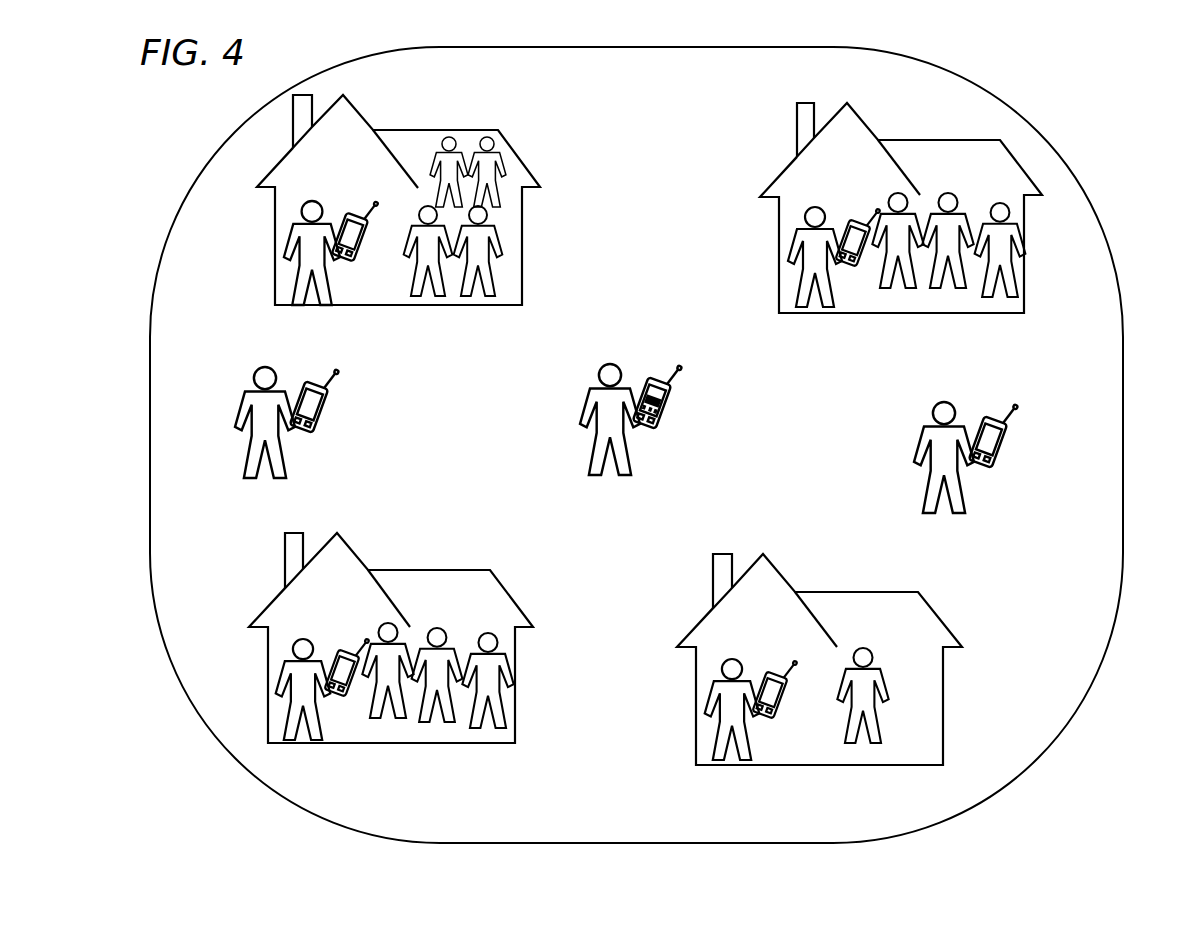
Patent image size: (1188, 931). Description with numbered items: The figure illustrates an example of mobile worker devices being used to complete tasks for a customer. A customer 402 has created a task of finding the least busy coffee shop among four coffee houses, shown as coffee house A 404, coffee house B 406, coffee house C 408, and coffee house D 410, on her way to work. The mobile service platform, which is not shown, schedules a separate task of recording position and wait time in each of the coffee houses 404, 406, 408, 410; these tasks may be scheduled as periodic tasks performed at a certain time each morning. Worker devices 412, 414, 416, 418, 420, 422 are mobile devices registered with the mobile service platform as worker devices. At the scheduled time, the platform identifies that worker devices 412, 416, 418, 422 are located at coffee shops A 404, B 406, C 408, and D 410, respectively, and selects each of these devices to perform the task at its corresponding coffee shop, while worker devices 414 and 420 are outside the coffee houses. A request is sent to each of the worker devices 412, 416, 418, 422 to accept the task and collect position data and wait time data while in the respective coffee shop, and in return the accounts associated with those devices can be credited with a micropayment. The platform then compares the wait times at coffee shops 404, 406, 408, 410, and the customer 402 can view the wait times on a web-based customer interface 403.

The customer 402 is at (606, 363).
The web-based customer interface 403 is at (663, 403).
The coffee house A 404 is at (423, 130).
The coffee house B 406 is at (416, 570).
The coffee house C 408 is at (832, 592).
The coffee house D 410 is at (925, 140).
The worker device 412 is at (346, 259).
The worker device 414 is at (321, 412).
The worker device 416 is at (340, 694).
The worker device 418 is at (768, 716).
The worker device 420 is at (1000, 440).
The worker device 422 is at (850, 268).